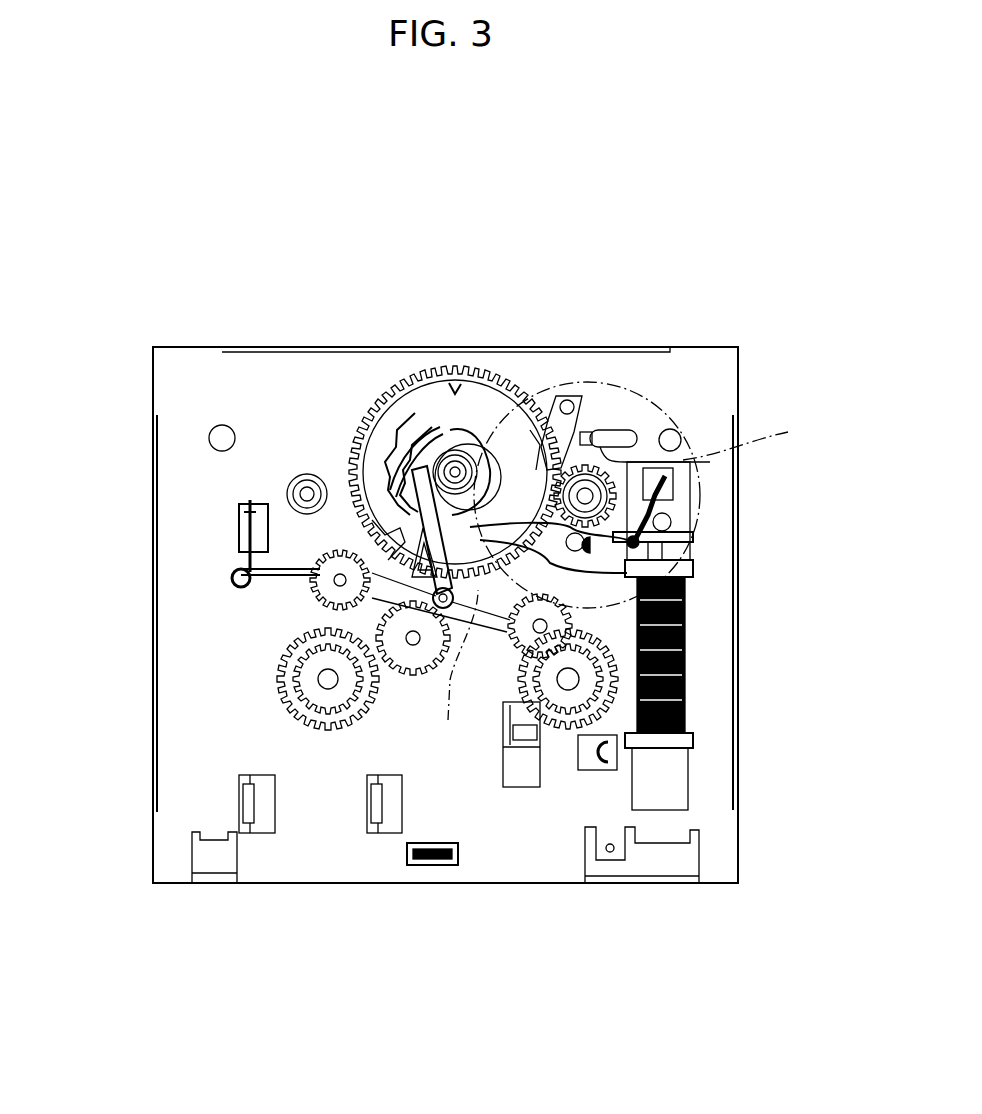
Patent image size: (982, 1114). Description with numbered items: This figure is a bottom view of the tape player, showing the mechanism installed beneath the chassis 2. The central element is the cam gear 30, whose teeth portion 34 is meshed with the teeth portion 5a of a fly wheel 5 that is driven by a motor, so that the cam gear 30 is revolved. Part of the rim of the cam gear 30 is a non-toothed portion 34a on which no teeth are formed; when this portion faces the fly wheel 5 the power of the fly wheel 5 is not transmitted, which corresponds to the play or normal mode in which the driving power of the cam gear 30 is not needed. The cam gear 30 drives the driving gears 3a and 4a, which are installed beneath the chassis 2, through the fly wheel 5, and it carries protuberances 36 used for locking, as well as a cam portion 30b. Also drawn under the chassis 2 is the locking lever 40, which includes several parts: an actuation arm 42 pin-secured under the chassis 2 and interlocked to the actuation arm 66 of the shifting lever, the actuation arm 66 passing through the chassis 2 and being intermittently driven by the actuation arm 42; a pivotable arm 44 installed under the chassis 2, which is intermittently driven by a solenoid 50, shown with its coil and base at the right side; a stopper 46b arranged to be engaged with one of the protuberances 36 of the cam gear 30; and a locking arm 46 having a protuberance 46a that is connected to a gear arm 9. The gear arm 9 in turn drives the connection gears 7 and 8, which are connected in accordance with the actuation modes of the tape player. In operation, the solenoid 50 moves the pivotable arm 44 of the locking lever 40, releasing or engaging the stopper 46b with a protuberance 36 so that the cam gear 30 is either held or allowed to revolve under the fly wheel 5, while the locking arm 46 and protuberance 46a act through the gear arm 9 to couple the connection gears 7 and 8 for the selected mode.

The chassis 2 is at (312, 868).
The driving gear 3a is at (565, 700).
The driving gear 4a is at (283, 690).
The fly wheel 5 is at (700, 505).
The teeth portion 5a is at (764, 437).
The connection gear 7 is at (317, 597).
The connection gear 8 is at (687, 647).
The gear arm 9 is at (317, 480).
The cam gear 30 is at (452, 372).
The cam portion 30b is at (365, 410).
The teeth portion 34 is at (392, 405).
The non-toothed portion 34a is at (458, 388).
The protuberance 36 is at (540, 403).
The locking lever 40 is at (687, 570).
The actuation arm 42 is at (608, 432).
The pivotable arm 44 is at (697, 533).
The locking arm 46 is at (513, 573).
The protuberance 46a is at (483, 458).
The stopper 46b is at (451, 678).
The solenoid 50 is at (687, 710).
The actuation arm 66 is at (610, 428).